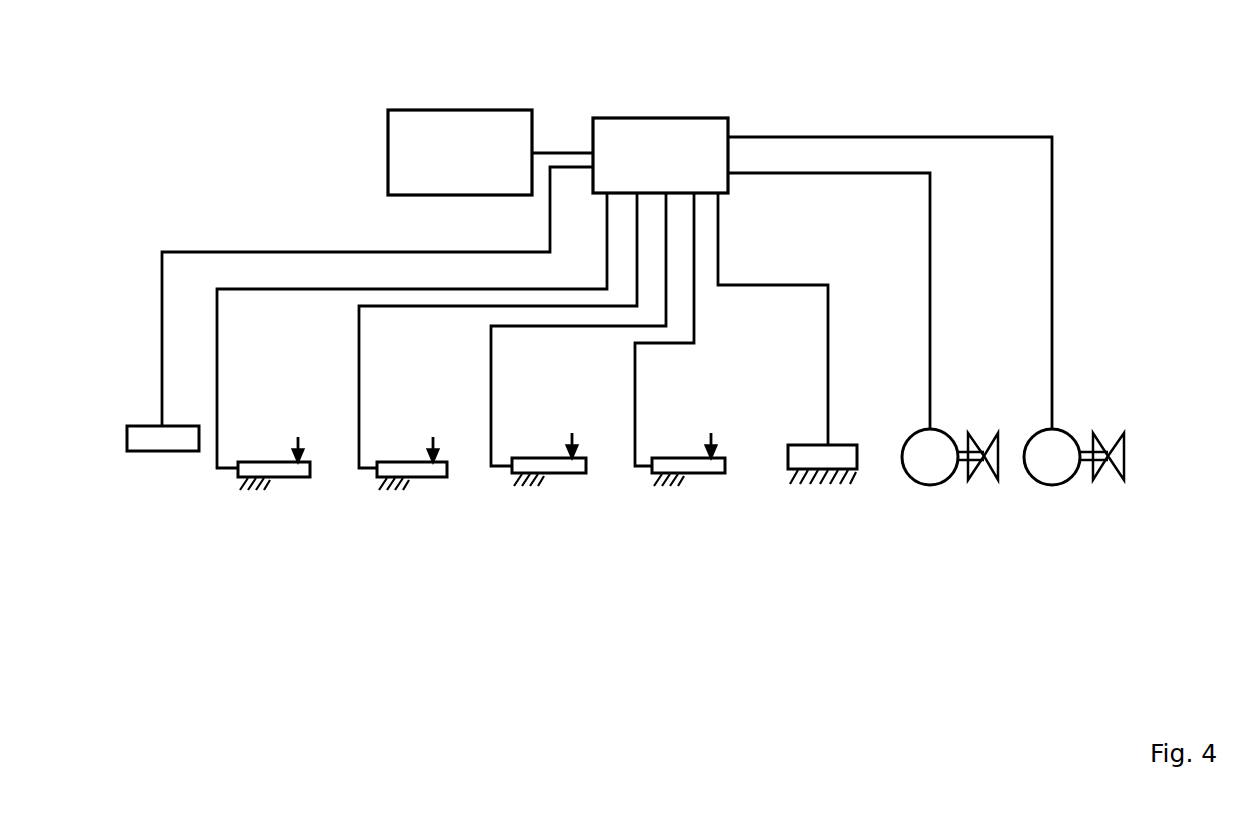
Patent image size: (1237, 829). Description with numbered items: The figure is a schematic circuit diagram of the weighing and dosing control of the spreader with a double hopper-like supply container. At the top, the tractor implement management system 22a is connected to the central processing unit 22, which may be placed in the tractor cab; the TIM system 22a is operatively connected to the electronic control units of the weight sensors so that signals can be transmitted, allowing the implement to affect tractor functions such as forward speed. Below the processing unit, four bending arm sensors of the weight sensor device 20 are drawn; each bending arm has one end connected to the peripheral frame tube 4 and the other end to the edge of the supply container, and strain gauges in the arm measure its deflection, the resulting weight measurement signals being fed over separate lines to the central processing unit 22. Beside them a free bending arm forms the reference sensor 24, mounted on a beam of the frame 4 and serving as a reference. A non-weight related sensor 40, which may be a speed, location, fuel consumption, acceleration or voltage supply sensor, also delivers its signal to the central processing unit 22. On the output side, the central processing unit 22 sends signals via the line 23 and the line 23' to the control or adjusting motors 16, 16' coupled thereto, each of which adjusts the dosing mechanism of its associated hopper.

The tractor implement management system 22a is at (503, 122).
The central processing unit 22 is at (695, 128).
The non-weight related sensor 40 is at (176, 440).
The weight sensor device 20 is at (278, 467).
The reference sensor 24 is at (808, 456).
The peripheral frame tube 4 is at (250, 492).
The line 23 is at (850, 301).
The line 23' is at (910, 283).
The control or adjusting motor 16 is at (938, 433).
The control or adjusting motor 16' is at (1061, 433).